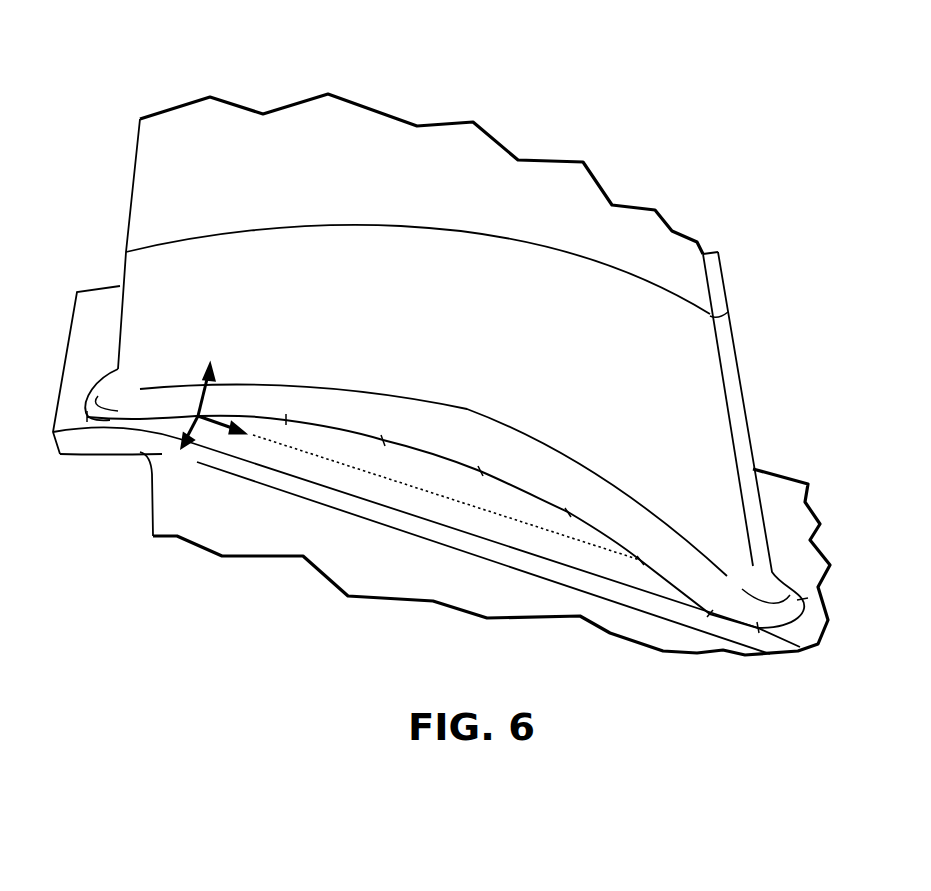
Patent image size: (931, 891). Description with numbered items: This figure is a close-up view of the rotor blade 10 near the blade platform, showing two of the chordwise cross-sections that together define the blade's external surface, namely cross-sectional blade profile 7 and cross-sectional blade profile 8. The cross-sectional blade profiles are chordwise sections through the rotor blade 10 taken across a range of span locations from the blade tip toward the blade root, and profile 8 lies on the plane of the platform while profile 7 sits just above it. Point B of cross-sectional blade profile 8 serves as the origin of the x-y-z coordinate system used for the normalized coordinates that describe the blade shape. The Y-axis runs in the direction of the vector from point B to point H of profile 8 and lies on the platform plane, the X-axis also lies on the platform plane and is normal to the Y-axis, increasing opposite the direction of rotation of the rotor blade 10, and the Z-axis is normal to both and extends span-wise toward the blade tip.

The cross-sectional blade profile 7 is at (180, 247).
The cross-sectional blade profile 8 is at (112, 368).
The rotor blade 10 is at (680, 121).